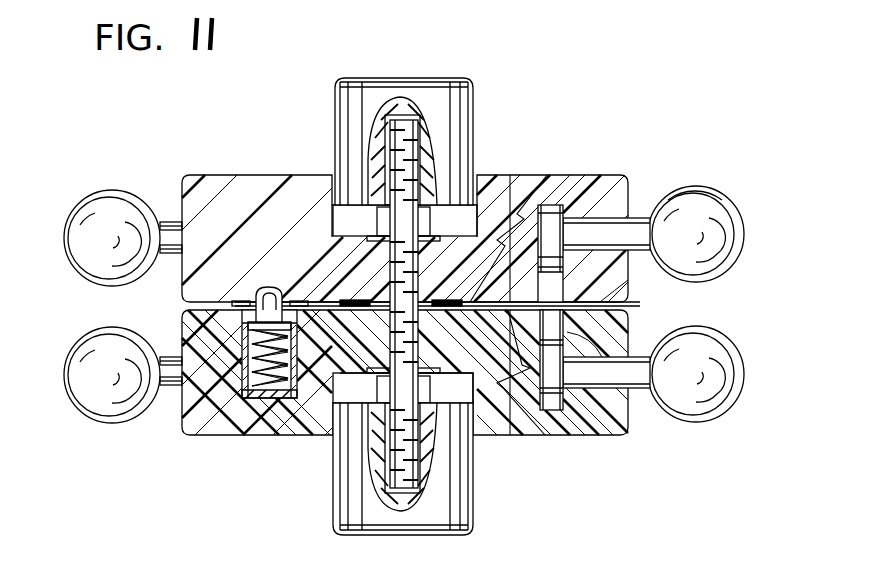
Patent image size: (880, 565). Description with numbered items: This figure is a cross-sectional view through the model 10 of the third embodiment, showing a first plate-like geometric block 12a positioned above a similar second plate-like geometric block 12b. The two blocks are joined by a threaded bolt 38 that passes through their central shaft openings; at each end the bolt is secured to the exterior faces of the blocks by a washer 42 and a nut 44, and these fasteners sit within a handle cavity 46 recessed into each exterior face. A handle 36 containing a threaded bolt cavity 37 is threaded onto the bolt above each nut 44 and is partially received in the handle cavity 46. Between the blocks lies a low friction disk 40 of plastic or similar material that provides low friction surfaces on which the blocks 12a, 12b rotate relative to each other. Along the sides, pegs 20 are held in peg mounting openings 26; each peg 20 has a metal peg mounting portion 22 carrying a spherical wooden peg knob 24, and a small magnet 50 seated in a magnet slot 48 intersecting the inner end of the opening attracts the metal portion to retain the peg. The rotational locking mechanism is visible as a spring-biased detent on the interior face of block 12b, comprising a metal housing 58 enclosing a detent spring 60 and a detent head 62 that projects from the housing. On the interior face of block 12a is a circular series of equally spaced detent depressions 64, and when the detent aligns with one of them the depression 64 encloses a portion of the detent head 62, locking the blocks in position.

The model 10 is at (172, 198).
The first plate-like geometric block 12a is at (301, 175).
The second plate-like geometric block 12b is at (315, 437).
The peg 20 is at (745, 217).
The peg mounting portion 22 is at (639, 217).
The peg knob 24 is at (694, 188).
The peg mounting opening 26 is at (620, 262).
The handle 36 is at (361, 79).
The threaded bolt cavity 37 is at (411, 117).
The threaded bolt 38 is at (421, 153).
The low friction disk 40 is at (502, 242).
The washer 42 is at (441, 376).
The nut 44 is at (452, 402).
The handle cavity 46 is at (327, 215).
The magnet slot 48 is at (613, 376).
The magnet 50 is at (550, 412).
The metal housing 58 is at (267, 400).
The detent spring 60 is at (245, 399).
The detent head 62 is at (182, 406).
The detent depression 64 is at (250, 290).